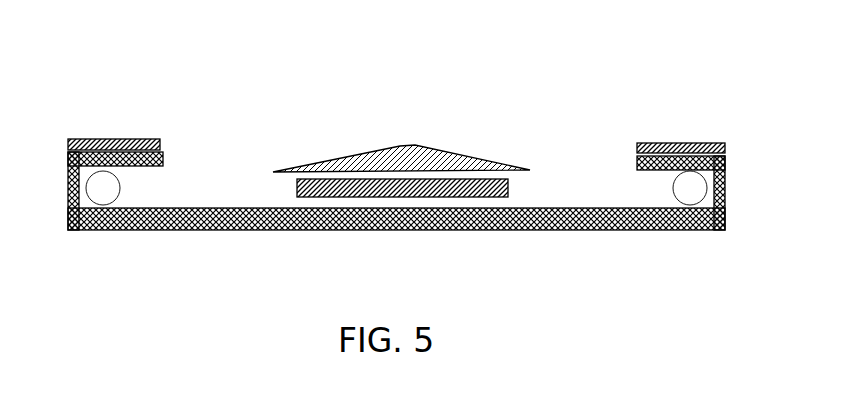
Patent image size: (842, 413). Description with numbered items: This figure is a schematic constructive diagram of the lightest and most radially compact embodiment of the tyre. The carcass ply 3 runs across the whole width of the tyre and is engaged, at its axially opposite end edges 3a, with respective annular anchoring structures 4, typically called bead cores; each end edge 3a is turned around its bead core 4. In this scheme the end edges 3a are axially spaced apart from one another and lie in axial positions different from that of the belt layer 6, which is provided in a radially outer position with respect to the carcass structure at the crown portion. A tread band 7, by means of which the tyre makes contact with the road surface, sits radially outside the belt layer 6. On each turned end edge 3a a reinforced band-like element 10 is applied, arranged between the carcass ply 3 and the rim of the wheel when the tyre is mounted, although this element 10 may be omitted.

The carcass ply 3 is at (232, 225).
The end edge of the carcass ply 3a is at (165, 146).
The annular anchoring structure 4 is at (103, 200).
The belt layer 6 is at (505, 190).
The tread band 7 is at (370, 160).
The reinforced band-like element 10 is at (113, 140).